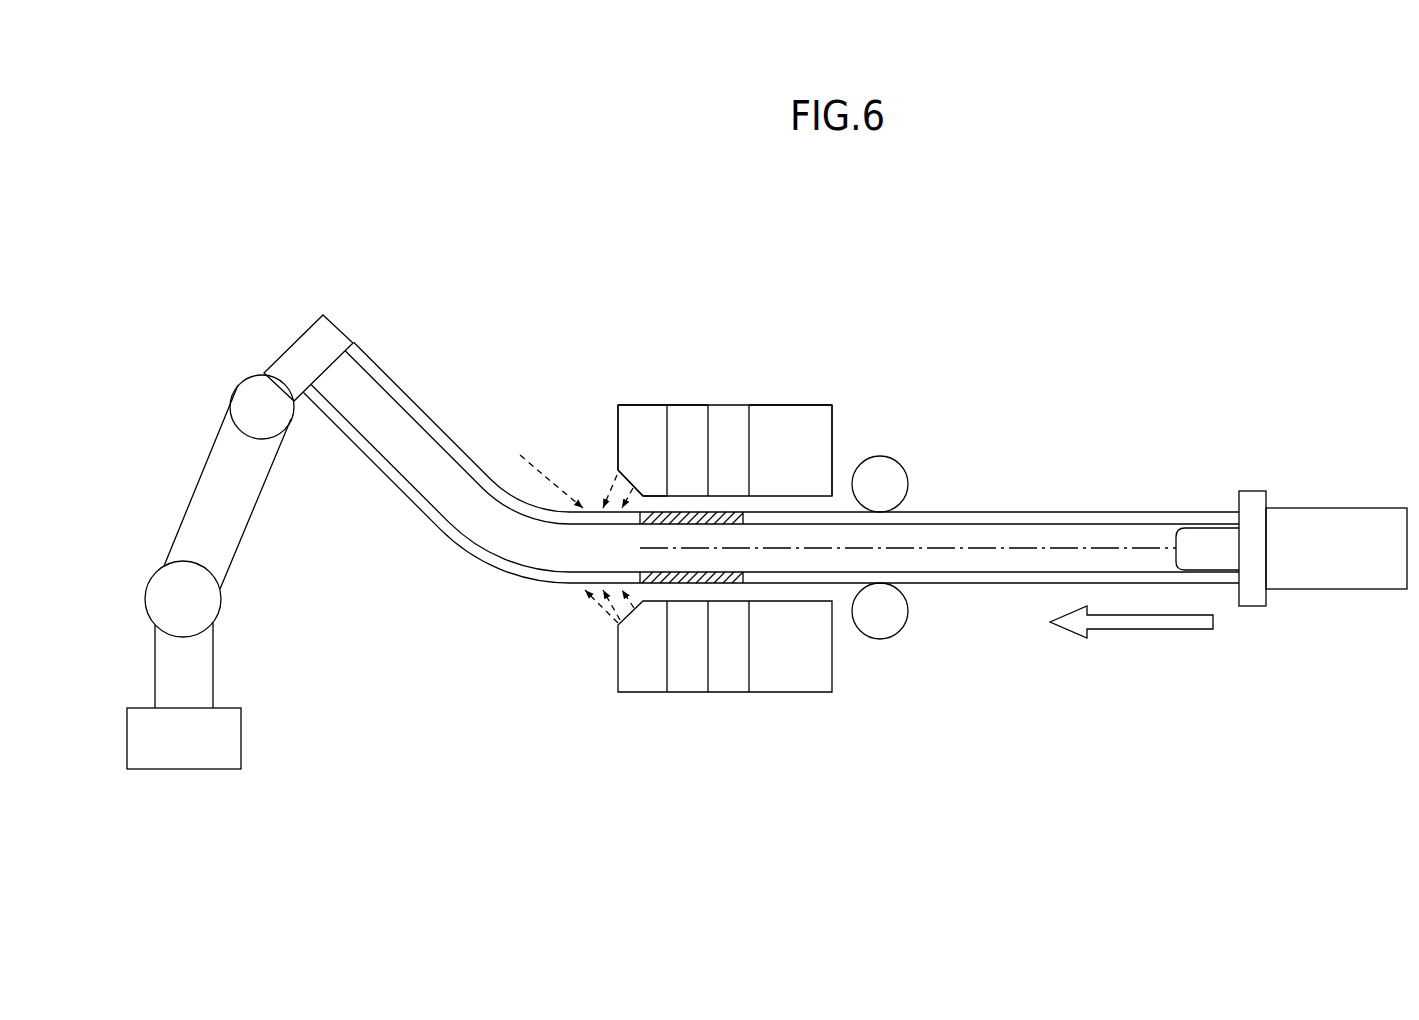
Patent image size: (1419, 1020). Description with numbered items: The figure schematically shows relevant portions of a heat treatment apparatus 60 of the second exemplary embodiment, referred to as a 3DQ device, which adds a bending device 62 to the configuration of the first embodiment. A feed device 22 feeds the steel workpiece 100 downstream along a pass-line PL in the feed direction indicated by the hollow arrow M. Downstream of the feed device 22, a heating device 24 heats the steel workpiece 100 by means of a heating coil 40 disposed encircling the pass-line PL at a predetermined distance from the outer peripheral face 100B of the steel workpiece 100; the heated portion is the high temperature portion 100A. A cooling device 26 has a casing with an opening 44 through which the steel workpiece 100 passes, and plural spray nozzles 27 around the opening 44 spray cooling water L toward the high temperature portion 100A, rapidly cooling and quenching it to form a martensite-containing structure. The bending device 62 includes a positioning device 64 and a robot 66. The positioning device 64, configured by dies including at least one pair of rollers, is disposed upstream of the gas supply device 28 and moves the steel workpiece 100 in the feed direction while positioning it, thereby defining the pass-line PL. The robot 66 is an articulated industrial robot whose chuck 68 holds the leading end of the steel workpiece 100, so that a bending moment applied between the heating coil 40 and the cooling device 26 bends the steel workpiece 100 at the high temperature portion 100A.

The feed device 22 is at (1320, 505).
The heating device 24 is at (718, 391).
The cooling device 26 is at (614, 408).
The spray nozzles 27 is at (618, 473).
The gas supply device 28 is at (835, 394).
The heating coil 40 is at (695, 404).
The opening 44 is at (658, 493).
The heat treatment apparatus 60 is at (1062, 356).
The bending device 62 is at (210, 572).
The positioning device 64 is at (888, 458).
The robot 66 is at (247, 521).
The chuck 68 is at (345, 322).
The steel workpiece 100 is at (995, 588).
The high temperature portion 100A is at (692, 583).
The outer peripheral face 100B is at (930, 583).
The cooling water L is at (571, 526).
The pass-line PL is at (1143, 548).
The hollow arrow M is at (1143, 630).